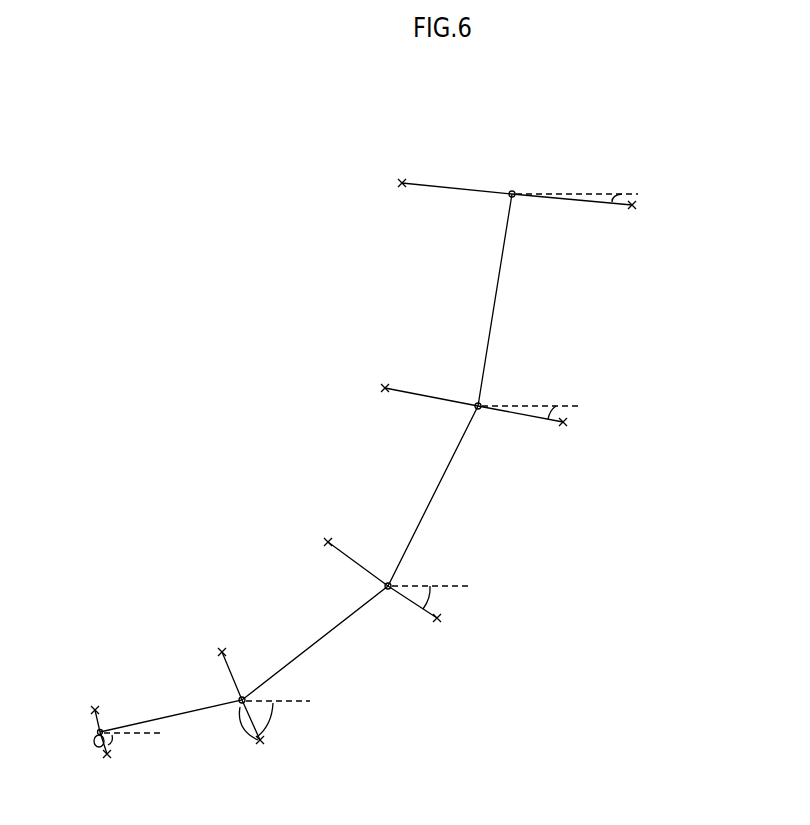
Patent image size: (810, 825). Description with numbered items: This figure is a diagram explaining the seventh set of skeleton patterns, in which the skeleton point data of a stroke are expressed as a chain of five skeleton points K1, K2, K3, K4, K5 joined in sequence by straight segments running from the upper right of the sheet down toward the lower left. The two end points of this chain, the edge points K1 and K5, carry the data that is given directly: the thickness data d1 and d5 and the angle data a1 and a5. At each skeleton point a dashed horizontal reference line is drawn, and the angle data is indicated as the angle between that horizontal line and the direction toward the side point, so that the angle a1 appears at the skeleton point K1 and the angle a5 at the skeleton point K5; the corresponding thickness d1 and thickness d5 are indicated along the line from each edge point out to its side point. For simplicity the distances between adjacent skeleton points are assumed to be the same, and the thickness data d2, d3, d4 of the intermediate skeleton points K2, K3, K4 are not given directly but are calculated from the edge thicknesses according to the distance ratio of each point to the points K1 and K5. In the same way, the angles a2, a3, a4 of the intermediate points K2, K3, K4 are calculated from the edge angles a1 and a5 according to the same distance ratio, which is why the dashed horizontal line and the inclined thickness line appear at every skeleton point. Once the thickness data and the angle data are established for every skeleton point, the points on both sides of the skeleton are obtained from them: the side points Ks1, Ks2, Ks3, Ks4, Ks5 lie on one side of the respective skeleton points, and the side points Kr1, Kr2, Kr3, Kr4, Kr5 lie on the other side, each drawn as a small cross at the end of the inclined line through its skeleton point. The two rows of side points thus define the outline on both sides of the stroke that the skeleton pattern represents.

The skeleton point K1 is at (512, 190).
The side point Ks1 is at (424, 178).
The side point Kr1 is at (601, 218).
The angle data a1 is at (615, 197).
The thickness data d1 is at (628, 207).
The skeleton point K2 is at (477, 405).
The side point Ks2 is at (394, 384).
The side point Kr2 is at (547, 434).
The angle data a2 is at (550, 417).
The thickness data d2 is at (561, 425).
The skeleton point K3 is at (387, 583).
The side point Ks3 is at (324, 548).
The side point Kr3 is at (437, 621).
The angle data a3 is at (432, 603).
The thickness data d3 is at (437, 619).
The skeleton point K4 is at (243, 697).
The side point Ks4 is at (200, 655).
The side point Kr4 is at (271, 742).
The angle data a4 is at (278, 721).
The thickness data d4 is at (231, 725).
The skeleton point K5 is at (98, 725).
The side point Ks5 is at (76, 697).
The side point Kr5 is at (106, 756).
The angle data a5 is at (110, 741).
The thickness data d5 is at (94, 744).